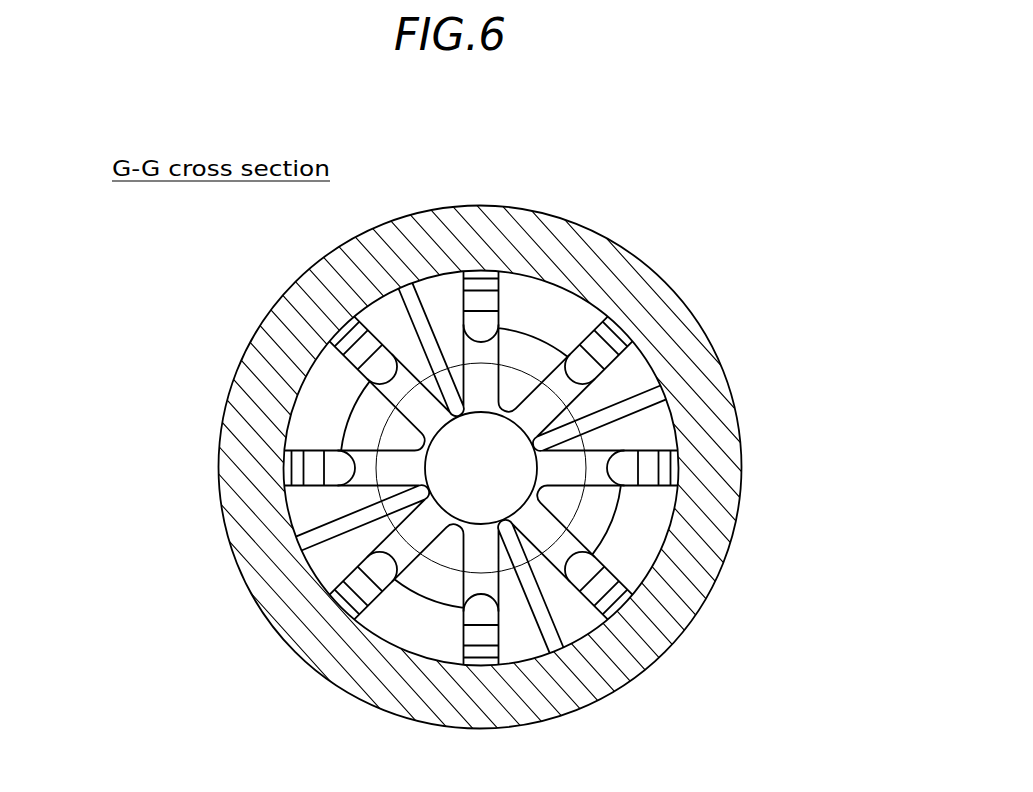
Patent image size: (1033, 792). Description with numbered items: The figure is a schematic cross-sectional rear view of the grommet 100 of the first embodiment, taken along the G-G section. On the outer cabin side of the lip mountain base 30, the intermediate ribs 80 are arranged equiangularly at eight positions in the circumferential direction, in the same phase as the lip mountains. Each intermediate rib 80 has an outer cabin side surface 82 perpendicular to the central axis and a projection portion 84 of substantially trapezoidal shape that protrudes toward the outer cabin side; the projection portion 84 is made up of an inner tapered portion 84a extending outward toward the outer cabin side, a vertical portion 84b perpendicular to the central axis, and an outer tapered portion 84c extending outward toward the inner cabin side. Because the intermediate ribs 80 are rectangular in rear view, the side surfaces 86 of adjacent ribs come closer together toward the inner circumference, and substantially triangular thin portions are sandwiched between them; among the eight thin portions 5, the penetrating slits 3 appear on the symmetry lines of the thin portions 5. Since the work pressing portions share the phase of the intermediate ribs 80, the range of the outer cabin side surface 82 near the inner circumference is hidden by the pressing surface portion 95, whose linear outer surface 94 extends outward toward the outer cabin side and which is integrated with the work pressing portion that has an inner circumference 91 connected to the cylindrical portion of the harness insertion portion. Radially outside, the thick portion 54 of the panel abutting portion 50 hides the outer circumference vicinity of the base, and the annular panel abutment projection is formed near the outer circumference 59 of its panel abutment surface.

The rotary device 100 is at (733, 95).
The lip mountain base 30 is at (763, 278).
The penetrating slits 3 is at (648, 350).
The thin portions 5 is at (635, 367).
The panel abutting portion 50 is at (777, 620).
The thick portion 54 is at (678, 620).
The outer circumference 59 is at (667, 662).
The intermediate ribs 80 is at (104, 450).
The side surfaces 86 is at (300, 460).
The outer cabin side surface 82 is at (305, 490).
The projection portion 84 is at (154, 530).
The inner tapered portion 84a is at (372, 560).
The vertical portion 84b is at (358, 586).
The outer tapered portion 84c is at (330, 605).
The pressing surface portions 95 is at (796, 432).
The outer surface 94 is at (578, 468).
The inner circumference 91 is at (547, 490).